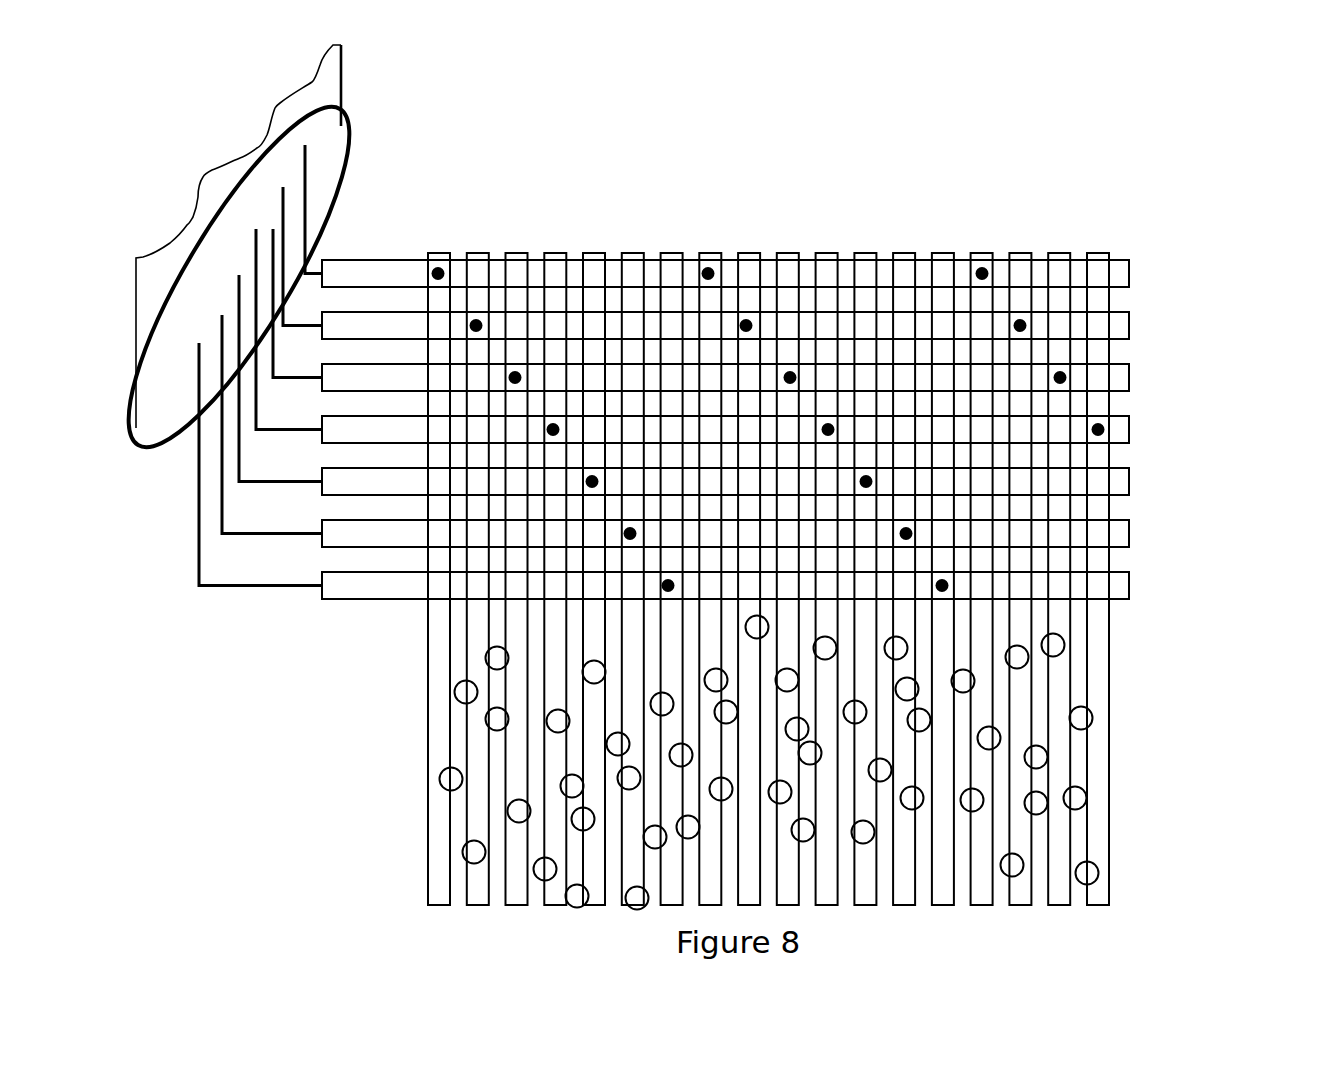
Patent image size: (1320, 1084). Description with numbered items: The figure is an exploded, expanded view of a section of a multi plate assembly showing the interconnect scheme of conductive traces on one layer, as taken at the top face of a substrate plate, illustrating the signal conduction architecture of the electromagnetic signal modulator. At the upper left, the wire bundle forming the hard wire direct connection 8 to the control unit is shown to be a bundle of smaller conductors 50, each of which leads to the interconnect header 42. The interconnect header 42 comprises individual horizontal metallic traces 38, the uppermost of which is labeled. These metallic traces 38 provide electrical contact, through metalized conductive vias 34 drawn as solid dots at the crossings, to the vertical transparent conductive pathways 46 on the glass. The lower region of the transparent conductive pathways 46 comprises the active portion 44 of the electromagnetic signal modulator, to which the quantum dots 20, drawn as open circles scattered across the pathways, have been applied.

The hard wire direct connection 8 is at (342, 109).
The quantum dots 20 is at (1093, 858).
The metal vias 34 is at (438, 273).
The metallic traces 38 is at (798, 252).
The interconnect header 42 is at (798, 408).
The active portion 44 is at (407, 622).
The transparent conductive pathways 46 is at (1098, 753).
The smaller conductors 50 is at (260, 593).